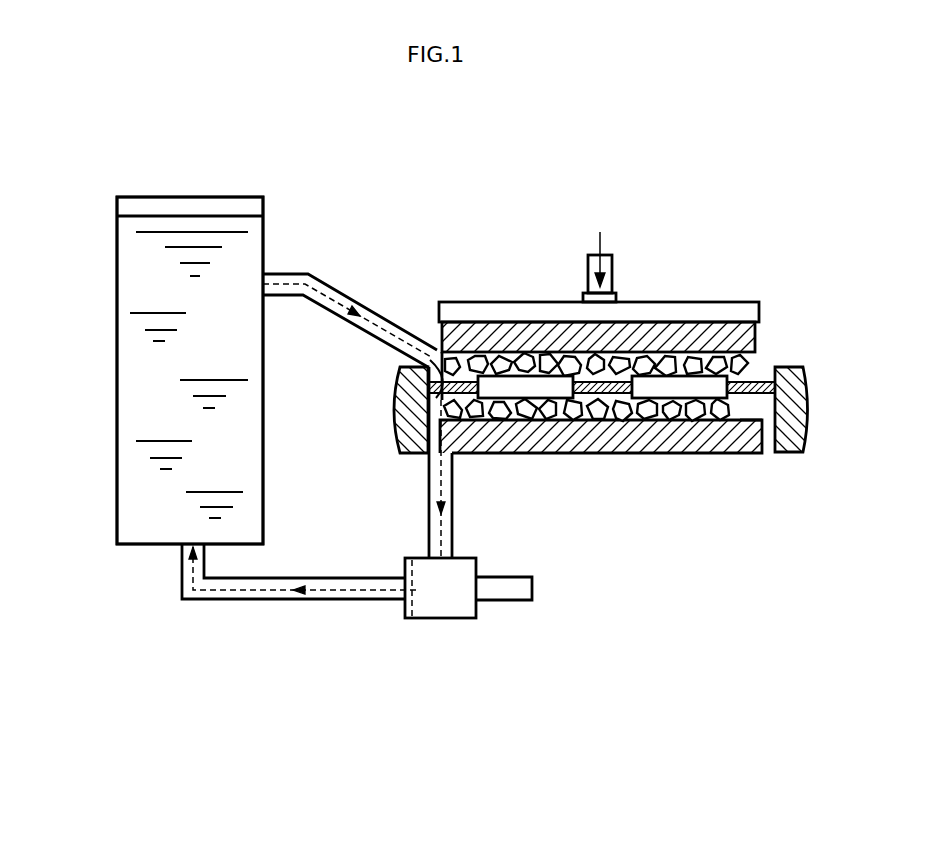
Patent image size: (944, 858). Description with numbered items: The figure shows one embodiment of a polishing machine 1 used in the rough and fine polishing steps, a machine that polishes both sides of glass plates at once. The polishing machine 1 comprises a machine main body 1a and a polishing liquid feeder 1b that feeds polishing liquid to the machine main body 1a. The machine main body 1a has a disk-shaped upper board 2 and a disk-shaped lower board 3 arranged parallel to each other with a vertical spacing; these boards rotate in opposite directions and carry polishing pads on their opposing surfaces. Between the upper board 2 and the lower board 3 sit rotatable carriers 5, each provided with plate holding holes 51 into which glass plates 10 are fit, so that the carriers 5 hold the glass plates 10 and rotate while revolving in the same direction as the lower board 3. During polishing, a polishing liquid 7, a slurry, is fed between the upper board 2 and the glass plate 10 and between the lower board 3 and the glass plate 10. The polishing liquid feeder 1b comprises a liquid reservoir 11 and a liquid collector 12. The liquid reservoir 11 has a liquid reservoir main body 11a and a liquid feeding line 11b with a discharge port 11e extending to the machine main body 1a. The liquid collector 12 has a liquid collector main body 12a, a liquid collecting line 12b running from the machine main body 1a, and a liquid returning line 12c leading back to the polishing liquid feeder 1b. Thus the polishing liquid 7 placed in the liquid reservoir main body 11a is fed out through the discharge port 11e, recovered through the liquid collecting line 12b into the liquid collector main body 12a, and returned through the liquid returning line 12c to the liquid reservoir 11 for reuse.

The polishing machine 1 is at (537, 178).
The machine main body 1a is at (731, 302).
The polishing liquid feeder 1b is at (117, 370).
The upper board 2 is at (670, 330).
The lower board 3 is at (752, 437).
The carrier 5 is at (758, 388).
The polishing liquid 7 is at (143, 491).
The glass plate 10 is at (665, 388).
The liquid reservoir 11 is at (255, 456).
The liquid reservoir main body 11a is at (255, 345).
The liquid feeding line 11b is at (372, 324).
The discharge port 11e is at (441, 405).
The liquid collector 12 is at (456, 576).
The liquid collector main body 12a is at (456, 597).
The liquid collecting line 12b is at (429, 507).
The liquid returning line 12c is at (340, 600).
The plate holding hole 51 is at (760, 386).